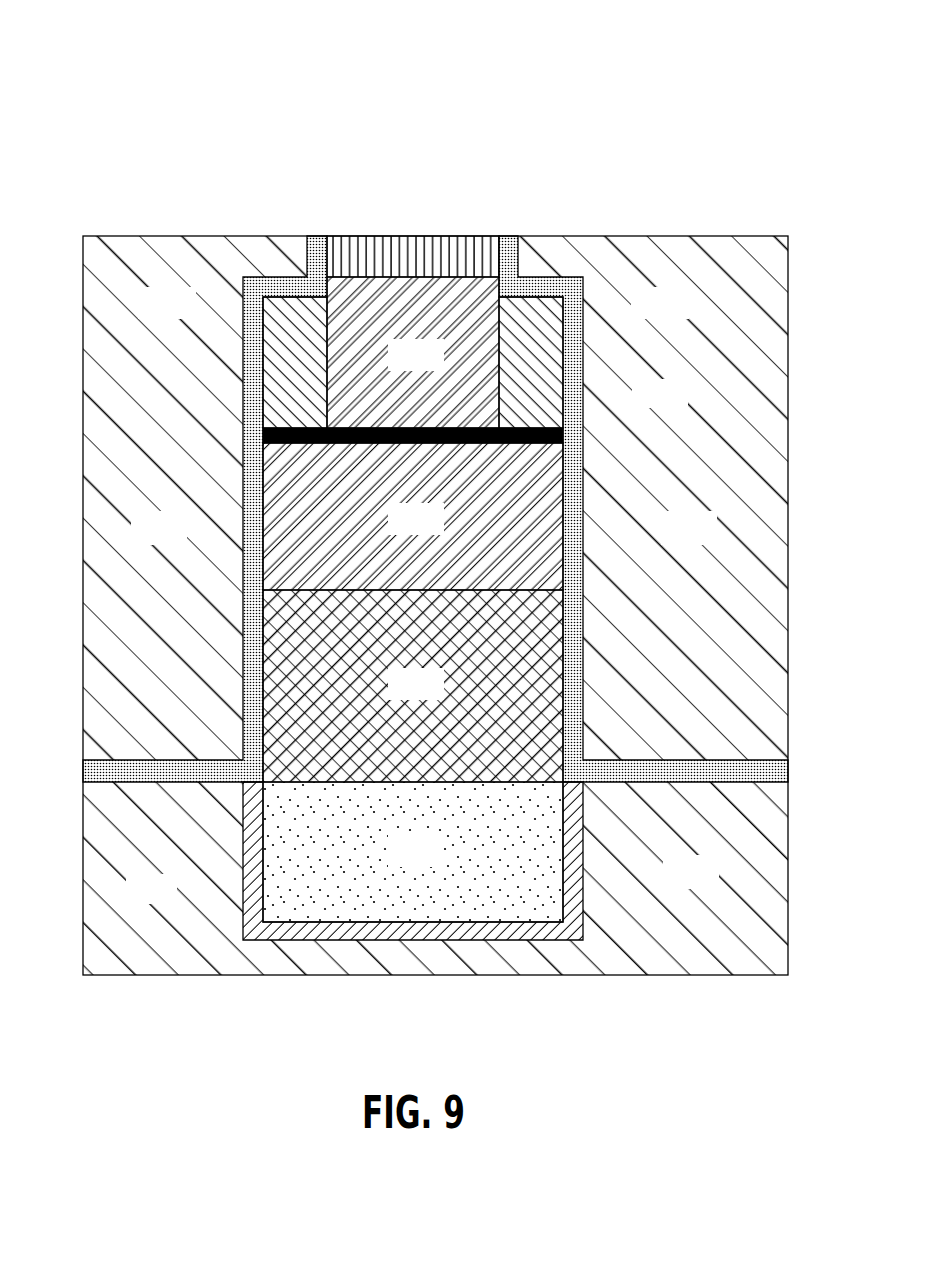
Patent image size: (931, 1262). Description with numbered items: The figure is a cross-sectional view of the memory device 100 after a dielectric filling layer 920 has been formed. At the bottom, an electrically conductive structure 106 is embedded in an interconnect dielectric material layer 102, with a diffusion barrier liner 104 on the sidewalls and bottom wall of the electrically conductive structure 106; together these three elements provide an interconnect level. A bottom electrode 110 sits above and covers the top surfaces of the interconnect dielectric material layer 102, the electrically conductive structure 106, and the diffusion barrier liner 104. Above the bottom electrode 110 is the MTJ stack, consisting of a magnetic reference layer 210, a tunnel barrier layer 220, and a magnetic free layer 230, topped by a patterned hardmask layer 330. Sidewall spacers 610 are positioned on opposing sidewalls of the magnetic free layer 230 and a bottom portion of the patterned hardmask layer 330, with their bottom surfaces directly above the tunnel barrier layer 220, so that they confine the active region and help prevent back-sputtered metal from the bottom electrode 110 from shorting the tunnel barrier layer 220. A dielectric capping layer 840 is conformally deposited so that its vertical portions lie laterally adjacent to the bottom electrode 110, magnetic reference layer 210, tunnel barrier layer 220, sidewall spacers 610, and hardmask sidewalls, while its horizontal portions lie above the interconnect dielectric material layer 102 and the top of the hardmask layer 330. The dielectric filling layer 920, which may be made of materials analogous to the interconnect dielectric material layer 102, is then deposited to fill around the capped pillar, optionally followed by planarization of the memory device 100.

The memory device 100 is at (443, 88).
The interconnect dielectric material layer 102 is at (715, 886).
The diffusion barrier liner 104 is at (250, 930).
The electrically conductive structure 106 is at (438, 865).
The bottom electrode 110 is at (438, 697).
The magnetic reference layer 210 is at (438, 532).
The tunnel barrier layer 220 is at (565, 432).
The magnetic free layer 230 is at (438, 367).
The patterned hardmask layer 330 is at (387, 250).
The sidewall spacers 610 is at (277, 345).
The dielectric capping layer 840 is at (313, 250).
The dielectric filling layer 920 is at (183, 542).